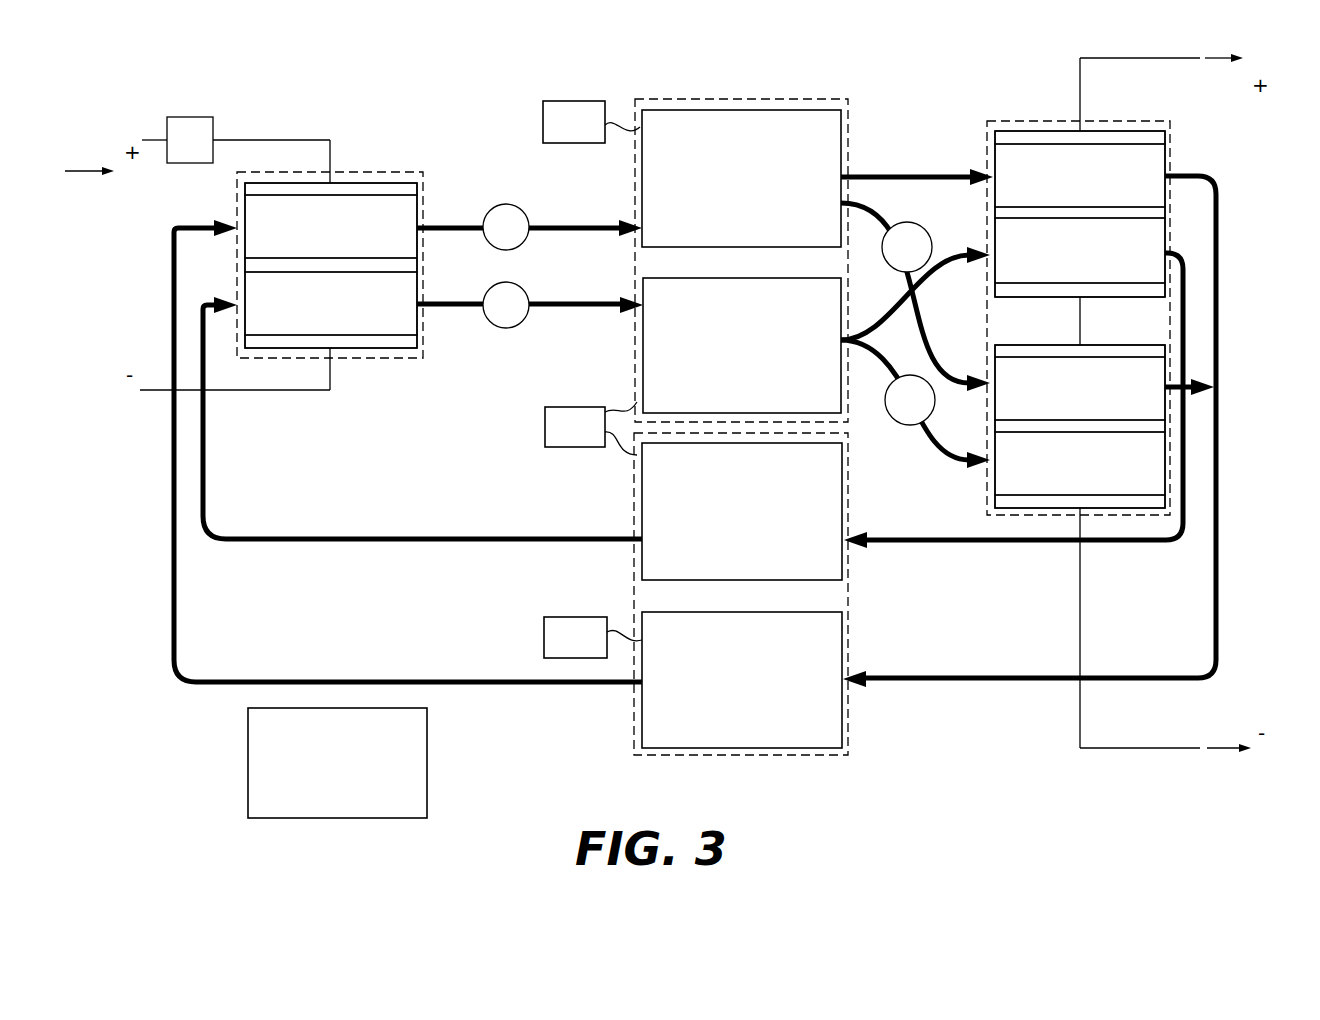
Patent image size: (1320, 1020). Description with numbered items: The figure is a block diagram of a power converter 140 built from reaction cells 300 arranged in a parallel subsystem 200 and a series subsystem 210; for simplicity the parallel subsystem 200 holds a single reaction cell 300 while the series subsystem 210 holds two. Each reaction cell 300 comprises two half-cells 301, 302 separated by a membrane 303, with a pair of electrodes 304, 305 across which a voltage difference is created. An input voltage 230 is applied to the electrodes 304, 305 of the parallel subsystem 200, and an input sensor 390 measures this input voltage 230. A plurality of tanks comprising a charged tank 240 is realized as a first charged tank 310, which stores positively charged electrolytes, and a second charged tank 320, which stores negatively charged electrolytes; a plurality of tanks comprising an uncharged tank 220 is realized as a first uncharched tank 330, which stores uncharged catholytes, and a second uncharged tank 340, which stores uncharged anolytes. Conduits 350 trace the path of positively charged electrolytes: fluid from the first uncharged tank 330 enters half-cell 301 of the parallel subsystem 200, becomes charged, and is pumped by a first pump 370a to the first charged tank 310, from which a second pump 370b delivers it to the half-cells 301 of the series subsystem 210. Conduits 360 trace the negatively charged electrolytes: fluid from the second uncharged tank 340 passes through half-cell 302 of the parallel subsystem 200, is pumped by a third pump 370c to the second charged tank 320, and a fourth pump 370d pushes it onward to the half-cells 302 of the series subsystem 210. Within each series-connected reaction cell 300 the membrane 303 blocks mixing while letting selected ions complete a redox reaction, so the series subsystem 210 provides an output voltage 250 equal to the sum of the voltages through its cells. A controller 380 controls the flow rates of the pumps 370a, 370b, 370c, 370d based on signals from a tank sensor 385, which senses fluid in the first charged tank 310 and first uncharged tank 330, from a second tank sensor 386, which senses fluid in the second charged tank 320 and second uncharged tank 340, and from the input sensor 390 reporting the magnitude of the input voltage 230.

The power converter 140 is at (356, 21).
The parallel subsystem 200 is at (345, 360).
The series subsystem 210 is at (1012, 120).
The uncharged tank 220 is at (810, 757).
The input voltage 230 is at (89, 154).
The charged tank 240 is at (735, 97).
The output voltage 250 is at (1181, 92).
The reaction cell 300 is at (229, 204).
The half-cell 301 is at (312, 239).
The half-cell 302 is at (312, 314).
The membrane 303 is at (408, 262).
The electrode 304 is at (382, 185).
The electrode 305 is at (378, 342).
The first charged tank 310 is at (722, 188).
The second charged tank 320 is at (722, 356).
The first uncharged tank 330 is at (722, 691).
The second uncharged tank 340 is at (722, 521).
The conduits 350 is at (457, 225).
The conduits 360 is at (557, 312).
The first pump 370a is at (527, 208).
The second pump 370b is at (935, 241).
The third pump 370c is at (503, 330).
The fourth pump 370d is at (902, 428).
The controller 380 is at (317, 774).
The tank sensor 385 is at (592, 379).
The second tank sensor 386 is at (591, 428).
The input sensor 390 is at (215, 118).